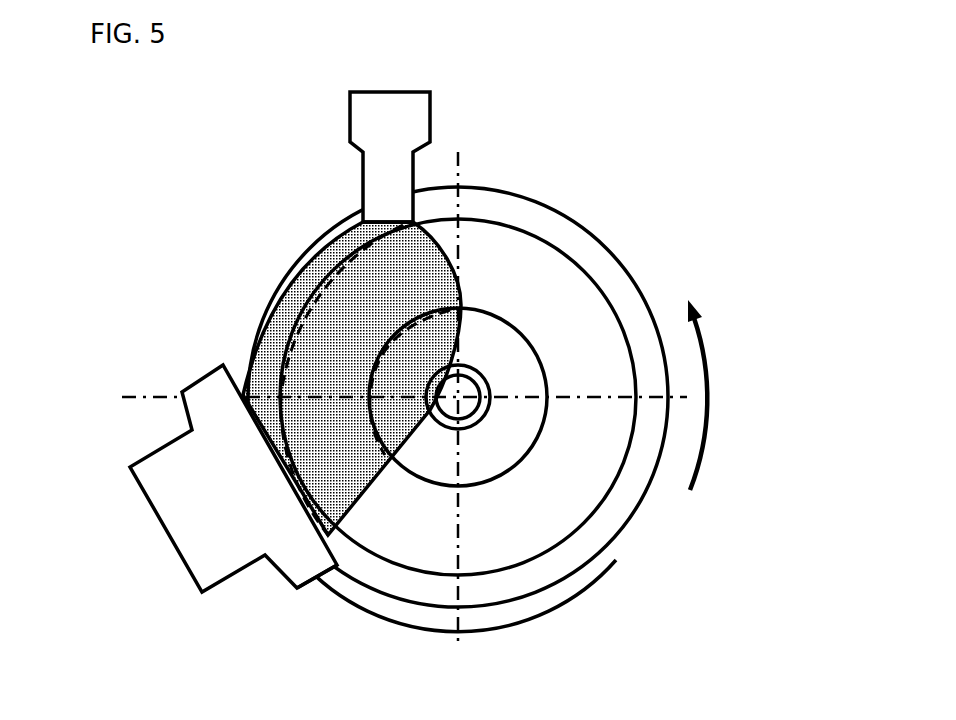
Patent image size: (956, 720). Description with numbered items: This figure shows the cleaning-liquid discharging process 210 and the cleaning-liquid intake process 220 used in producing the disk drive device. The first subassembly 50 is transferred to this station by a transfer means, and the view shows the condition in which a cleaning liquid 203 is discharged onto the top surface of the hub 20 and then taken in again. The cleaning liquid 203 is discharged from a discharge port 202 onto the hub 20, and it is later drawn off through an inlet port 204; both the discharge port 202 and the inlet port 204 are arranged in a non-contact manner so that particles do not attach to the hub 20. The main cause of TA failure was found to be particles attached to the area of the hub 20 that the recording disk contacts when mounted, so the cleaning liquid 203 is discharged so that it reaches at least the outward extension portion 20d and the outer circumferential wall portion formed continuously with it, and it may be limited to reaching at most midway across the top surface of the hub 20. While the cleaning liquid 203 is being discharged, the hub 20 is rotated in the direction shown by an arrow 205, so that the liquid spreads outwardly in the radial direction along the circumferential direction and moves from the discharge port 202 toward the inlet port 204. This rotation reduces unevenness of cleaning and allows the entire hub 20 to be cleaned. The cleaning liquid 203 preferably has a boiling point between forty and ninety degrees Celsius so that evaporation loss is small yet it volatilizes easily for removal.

The hub 20 is at (618, 287).
The outward extension portion 20d is at (645, 500).
The first subassembly 50 is at (538, 615).
The discharge port 202 is at (390, 213).
The cleaning liquid 203 is at (278, 335).
The inlet port 204 is at (280, 472).
The arrow 205 is at (715, 380).
The cleaning-liquid discharging process 210 is at (345, 202).
The cleaning-liquid intake process 220 is at (342, 586).